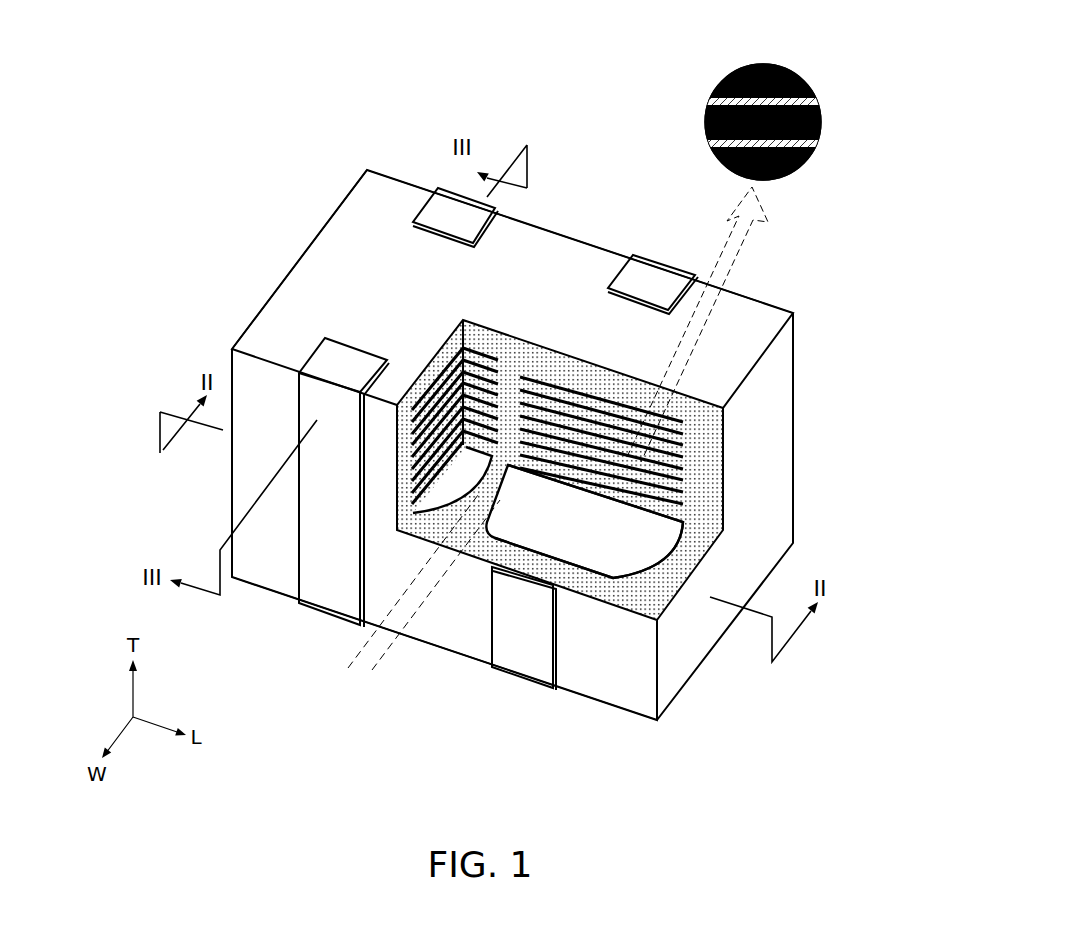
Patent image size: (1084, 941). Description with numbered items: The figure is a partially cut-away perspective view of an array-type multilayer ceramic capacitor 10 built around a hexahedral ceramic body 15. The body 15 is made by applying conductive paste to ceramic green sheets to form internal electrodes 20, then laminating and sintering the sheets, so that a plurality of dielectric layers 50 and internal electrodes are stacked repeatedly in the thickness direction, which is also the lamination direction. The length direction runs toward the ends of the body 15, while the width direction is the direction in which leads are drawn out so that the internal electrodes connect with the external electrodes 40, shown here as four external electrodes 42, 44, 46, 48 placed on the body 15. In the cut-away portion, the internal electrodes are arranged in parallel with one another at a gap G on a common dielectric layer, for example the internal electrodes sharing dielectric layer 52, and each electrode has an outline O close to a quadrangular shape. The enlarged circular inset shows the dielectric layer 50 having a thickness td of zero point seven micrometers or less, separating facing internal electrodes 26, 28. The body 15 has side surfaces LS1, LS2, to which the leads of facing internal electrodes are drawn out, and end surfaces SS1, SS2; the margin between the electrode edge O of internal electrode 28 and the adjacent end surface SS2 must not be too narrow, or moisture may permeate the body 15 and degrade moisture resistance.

The array-type multilayer ceramic capacitor 10 is at (561, 399).
The ceramic body 15 is at (388, 190).
The internal electrodes 20 is at (667, 284).
The internal electrode 26 is at (763, 143).
The internal electrode 28 is at (763, 101).
The external electrodes 40 is at (489, 399).
The external electrode 42 is at (300, 606).
The external electrode 44 is at (440, 197).
The external electrode 46 is at (512, 668).
The external electrode 48 is at (665, 262).
The dielectric layer 50 is at (807, 163).
The dielectric layer 52 is at (787, 173).
The thickness td is at (682, 72).
The gap G is at (327, 653).
The outline O is at (637, 570).
The end surface SS1 is at (282, 282).
The end surface SS2 is at (793, 455).
The side surface LS1 is at (470, 650).
The side surface LS2 is at (560, 235).